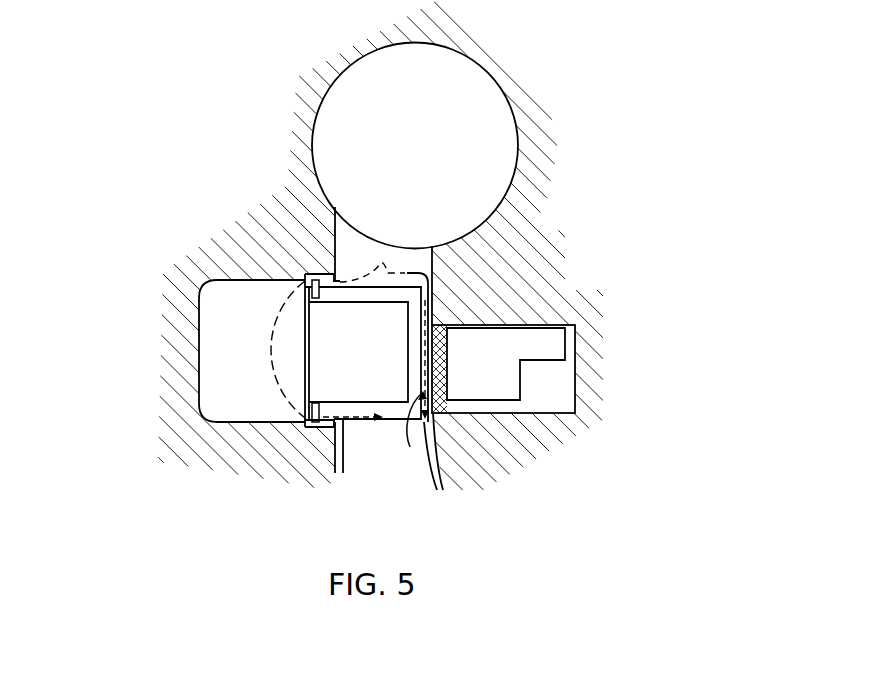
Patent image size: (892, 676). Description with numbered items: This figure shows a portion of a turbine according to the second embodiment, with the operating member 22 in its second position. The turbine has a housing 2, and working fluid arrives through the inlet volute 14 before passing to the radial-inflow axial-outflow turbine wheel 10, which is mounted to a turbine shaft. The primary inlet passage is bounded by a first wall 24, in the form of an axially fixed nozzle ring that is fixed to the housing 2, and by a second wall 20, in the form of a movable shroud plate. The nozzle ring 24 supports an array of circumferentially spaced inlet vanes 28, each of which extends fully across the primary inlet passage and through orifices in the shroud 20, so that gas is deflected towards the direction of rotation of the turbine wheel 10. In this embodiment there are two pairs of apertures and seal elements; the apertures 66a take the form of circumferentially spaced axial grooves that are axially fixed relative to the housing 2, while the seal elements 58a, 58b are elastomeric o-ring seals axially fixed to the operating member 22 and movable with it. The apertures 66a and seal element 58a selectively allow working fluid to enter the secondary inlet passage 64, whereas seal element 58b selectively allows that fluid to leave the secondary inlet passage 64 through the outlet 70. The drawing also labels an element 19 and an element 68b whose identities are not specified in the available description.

The housing 2 is at (245, 262).
The turbine wheel 10 is at (393, 467).
The inlet volute 14 is at (472, 87).
The wall 19 is at (417, 272).
The second wall 20 is at (431, 345).
The operating member 22 is at (417, 302).
The first wall 24 is at (415, 441).
The inlet vanes 28 is at (540, 347).
The seal element 58a is at (316, 299).
The seal element 58b is at (315, 404).
The secondary inlet passage 64 is at (272, 344).
The apertures 66a is at (317, 273).
The lower sealing lip 68b is at (308, 427).
The outlet 70 is at (321, 436).